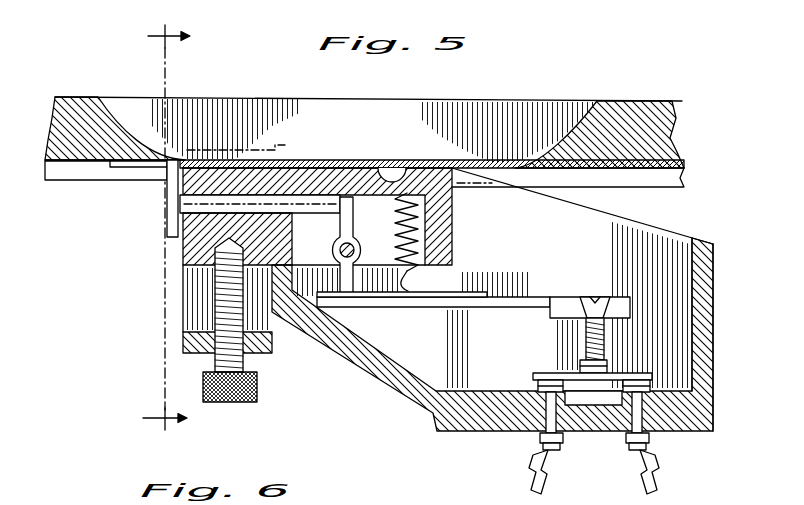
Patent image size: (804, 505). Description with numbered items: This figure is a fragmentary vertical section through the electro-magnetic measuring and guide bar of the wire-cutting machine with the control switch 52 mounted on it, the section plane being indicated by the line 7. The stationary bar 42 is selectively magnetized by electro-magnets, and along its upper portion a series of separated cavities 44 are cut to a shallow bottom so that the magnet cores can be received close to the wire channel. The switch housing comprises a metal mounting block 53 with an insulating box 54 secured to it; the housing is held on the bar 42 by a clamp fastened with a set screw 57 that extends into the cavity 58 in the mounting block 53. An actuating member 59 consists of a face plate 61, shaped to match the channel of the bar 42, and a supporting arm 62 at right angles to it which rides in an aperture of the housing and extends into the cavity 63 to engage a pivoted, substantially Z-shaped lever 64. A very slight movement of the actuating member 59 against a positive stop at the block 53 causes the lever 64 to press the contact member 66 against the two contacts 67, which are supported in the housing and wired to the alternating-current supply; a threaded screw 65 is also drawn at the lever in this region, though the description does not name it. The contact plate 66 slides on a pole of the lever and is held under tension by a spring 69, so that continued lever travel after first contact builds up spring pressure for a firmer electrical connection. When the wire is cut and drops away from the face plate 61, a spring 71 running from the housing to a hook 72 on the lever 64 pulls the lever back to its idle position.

The section line 7- 7 is at (166, 230).
The stationary bar 42 is at (642, 101).
The cavities 44 is at (131, 152).
The control switch 52 is at (350, 382).
The metal mounting block 53 is at (203, 183).
The insulating box 54 is at (714, 272).
The set screw 57 is at (220, 362).
The cavity 58 is at (268, 336).
The actuating member 59 is at (166, 219).
The face plate 61 is at (172, 235).
The supporting arm 62 is at (297, 203).
The cavity 63 is at (420, 216).
The pivoted lever 64 is at (514, 296).
The screw 65 is at (601, 346).
The contact member 66 is at (533, 376).
The contacts 67 is at (627, 391).
The spring 69 is at (583, 341).
The spring 71 is at (403, 248).
The hook 72 is at (420, 290).